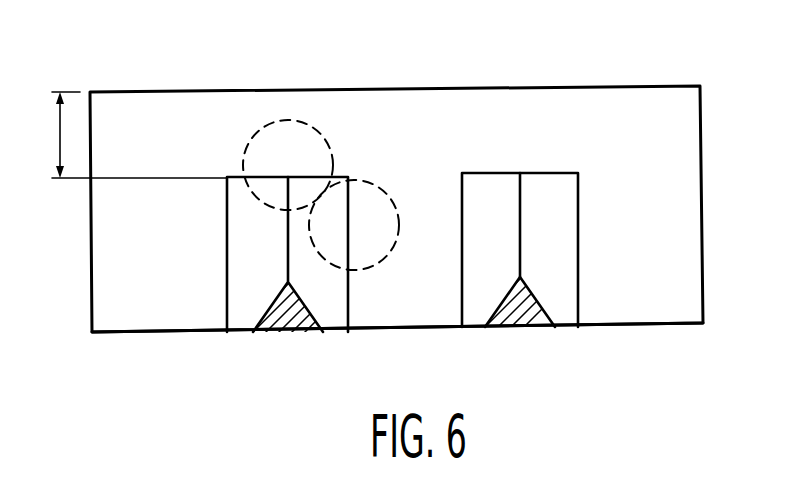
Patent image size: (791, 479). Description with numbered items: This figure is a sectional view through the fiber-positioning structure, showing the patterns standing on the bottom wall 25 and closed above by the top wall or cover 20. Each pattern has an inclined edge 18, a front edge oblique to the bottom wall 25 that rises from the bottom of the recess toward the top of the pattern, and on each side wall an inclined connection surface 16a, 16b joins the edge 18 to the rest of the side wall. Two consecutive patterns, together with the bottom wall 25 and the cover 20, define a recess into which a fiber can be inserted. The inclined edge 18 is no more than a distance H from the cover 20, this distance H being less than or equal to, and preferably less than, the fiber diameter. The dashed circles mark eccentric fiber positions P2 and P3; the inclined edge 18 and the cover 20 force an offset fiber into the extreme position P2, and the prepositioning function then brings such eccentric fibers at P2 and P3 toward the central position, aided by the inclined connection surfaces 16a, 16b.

The cover 20 is at (618, 86).
The bottom wall 25 is at (672, 327).
The inclined edge 18 is at (282, 262).
The inclined connection surface 16a is at (480, 275).
The inclined connection surface 16b is at (567, 275).
The extreme position P2 is at (288, 120).
The eccentric position P3 is at (376, 187).
The distance H is at (132, 135).